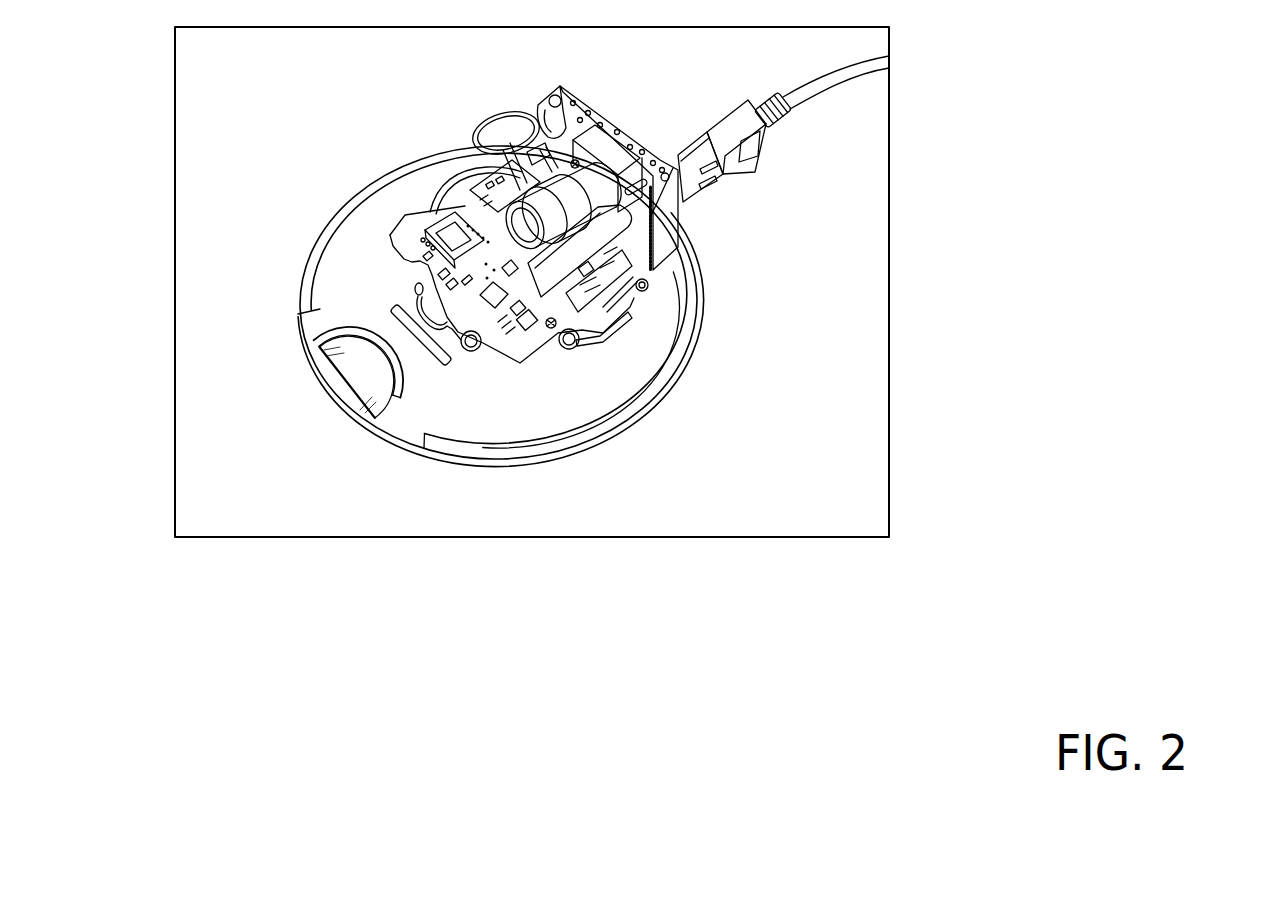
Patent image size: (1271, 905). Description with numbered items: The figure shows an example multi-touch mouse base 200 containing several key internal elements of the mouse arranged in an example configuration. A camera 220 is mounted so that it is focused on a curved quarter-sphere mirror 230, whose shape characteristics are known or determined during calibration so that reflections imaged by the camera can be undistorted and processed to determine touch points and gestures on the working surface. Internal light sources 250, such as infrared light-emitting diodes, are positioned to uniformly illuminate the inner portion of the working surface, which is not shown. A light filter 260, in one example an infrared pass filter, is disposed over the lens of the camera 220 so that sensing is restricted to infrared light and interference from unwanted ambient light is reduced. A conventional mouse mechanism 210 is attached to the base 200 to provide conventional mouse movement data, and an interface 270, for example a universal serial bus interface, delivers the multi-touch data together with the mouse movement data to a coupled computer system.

The MTM base 200 is at (334, 276).
The conventional mouse mechanism 210 is at (485, 283).
The camera 220 is at (598, 142).
The curved ¼ sphere mirror 230 is at (363, 378).
The internal light source 250 is at (475, 352).
The light filter 260 is at (522, 197).
The interface 270 is at (744, 160).